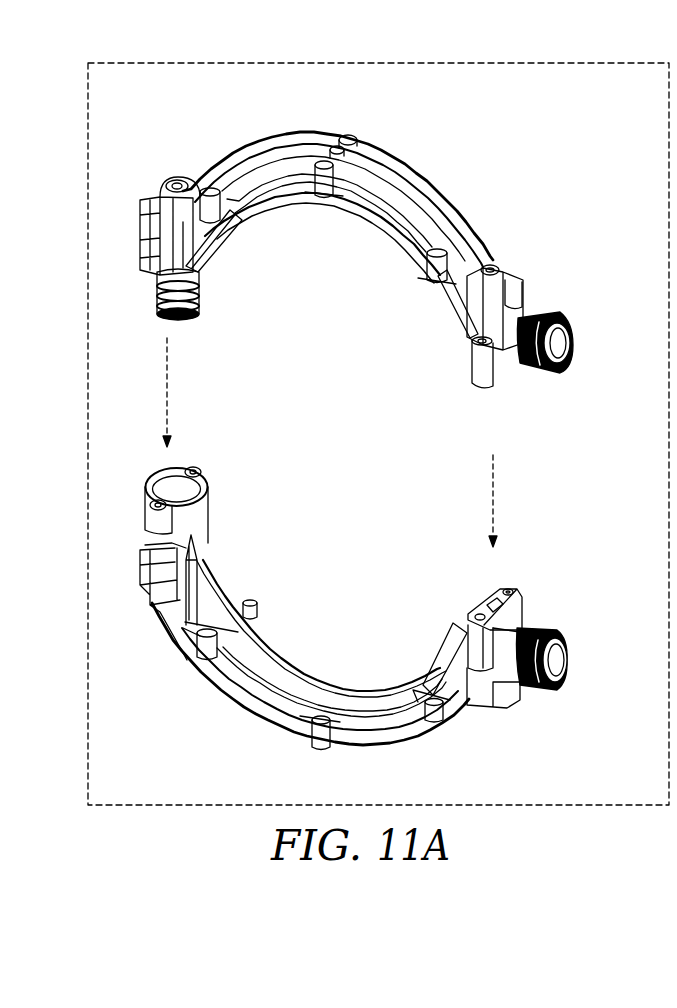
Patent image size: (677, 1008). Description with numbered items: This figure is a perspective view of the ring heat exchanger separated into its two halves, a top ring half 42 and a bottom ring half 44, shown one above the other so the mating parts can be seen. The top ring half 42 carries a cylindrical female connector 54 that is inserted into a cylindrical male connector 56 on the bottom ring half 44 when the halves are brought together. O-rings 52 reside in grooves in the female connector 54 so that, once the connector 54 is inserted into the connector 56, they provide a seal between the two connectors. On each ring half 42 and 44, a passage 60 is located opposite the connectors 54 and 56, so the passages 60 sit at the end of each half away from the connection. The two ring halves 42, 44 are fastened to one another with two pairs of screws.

The top ring half 42 is at (486, 166).
The bottom ring half 44 is at (206, 714).
The O-rings 52 is at (200, 290).
The cylindrical female connector 54 is at (198, 326).
The cylindrical male connector 56 is at (175, 492).
The passages 60 is at (566, 344).